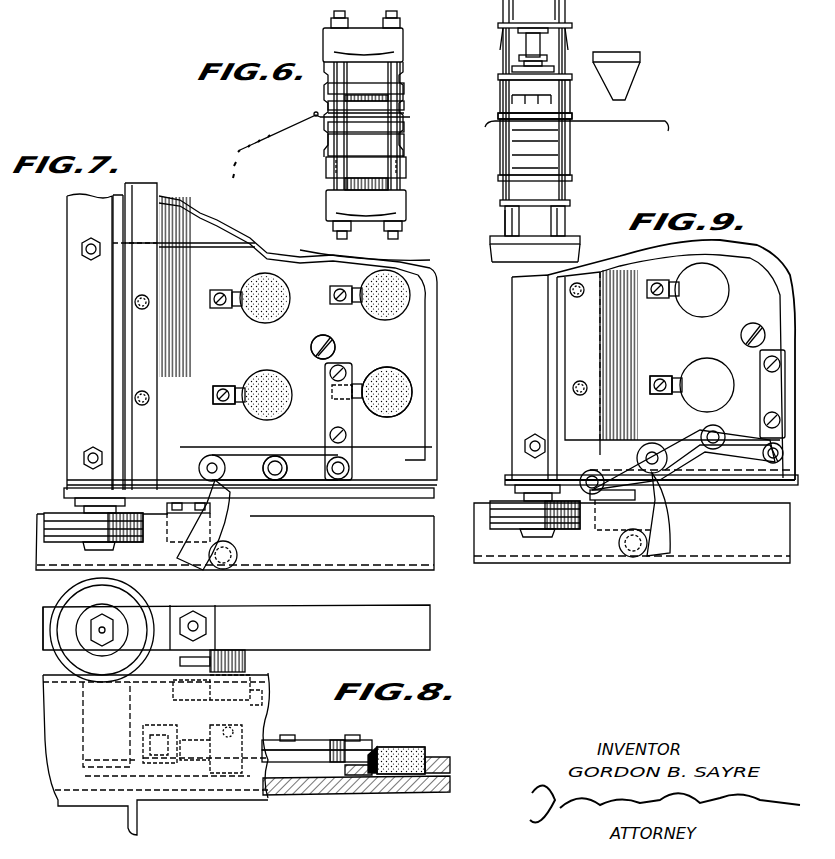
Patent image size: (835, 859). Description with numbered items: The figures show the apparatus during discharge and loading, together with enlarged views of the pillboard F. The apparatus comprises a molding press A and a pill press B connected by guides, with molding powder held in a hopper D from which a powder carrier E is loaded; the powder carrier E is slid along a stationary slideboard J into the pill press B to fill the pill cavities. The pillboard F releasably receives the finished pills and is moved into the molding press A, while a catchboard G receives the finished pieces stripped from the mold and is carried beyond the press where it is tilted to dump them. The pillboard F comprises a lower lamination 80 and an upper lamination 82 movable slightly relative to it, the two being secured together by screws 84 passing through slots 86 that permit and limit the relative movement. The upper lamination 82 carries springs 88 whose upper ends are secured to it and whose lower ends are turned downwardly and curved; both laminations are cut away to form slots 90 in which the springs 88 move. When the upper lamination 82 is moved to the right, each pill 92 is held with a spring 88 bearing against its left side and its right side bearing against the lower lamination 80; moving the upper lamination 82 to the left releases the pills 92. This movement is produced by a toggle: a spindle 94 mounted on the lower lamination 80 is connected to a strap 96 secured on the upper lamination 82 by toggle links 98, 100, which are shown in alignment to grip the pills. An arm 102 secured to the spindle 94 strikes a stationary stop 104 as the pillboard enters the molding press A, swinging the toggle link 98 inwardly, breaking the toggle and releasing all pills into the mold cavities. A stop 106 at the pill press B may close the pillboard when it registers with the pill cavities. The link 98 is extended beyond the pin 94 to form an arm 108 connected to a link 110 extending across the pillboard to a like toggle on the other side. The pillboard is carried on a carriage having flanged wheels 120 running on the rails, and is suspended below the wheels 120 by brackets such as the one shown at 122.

In FIG. 6, the molding press A is at (404, 45).
In FIG. 6, the pill press B is at (566, 12).
In FIG. 6, the hopper D is at (641, 60).
In FIG. 6, the powder carrier E is at (572, 112).
In FIG. 6, the pillboard F is at (404, 112).
In FIG. 6, the catchboard G is at (300, 120).
In FIG. 6, the stationary slideboard J is at (577, 133).
In FIG. 7, the lower lamination 80 is at (430, 300).
In FIG. 8, the lower lamination 80 is at (450, 784).
In FIG. 9, the lower lamination 80 is at (757, 255).
In FIG. 7, the upper lamination 82 is at (418, 358).
In FIG. 8, the upper lamination 82 is at (448, 757).
In FIG. 9, the upper lamination 82 is at (625, 275).
In FIG. 7, the screws 84 is at (336, 347).
In FIG. 9, the screws 84 is at (740, 335).
In FIG. 7, the slots 86 is at (310, 347).
In FIG. 7, the springs 88 is at (240, 318).
In FIG. 8, the springs 88 is at (385, 747).
In FIG. 9, the springs 88 is at (690, 337).
In FIG. 7, the slots 90 is at (232, 410).
In FIG. 9, the slots 90 is at (680, 372).
In FIG. 7, the pills 92 is at (403, 388).
In FIG. 8, the pills 92 is at (418, 747).
In FIG. 7, the spindle 94 is at (212, 473).
In FIG. 8, the spindle 94 is at (252, 710).
In FIG. 9, the spindle 94 is at (652, 445).
In FIG. 7, the strap 96 is at (345, 415).
In FIG. 8, the strap 96 is at (372, 752).
In FIG. 9, the strap 96 is at (772, 394).
In FIG. 7, the toggle link 98 is at (258, 478).
In FIG. 9, the toggle link 98 is at (695, 450).
In FIG. 7, the toggle link 100 is at (318, 474).
In FIG. 7, the arm 102 is at (192, 555).
In FIG. 8, the arm 102 is at (195, 655).
In FIG. 9, the arm 102 is at (662, 540).
In FIG. 9, the stationary stop 104 is at (633, 550).
In FIG. 7, the stop 106 is at (236, 560).
In FIG. 7, the arm 108 is at (180, 473).
In FIG. 8, the arm 108 is at (193, 740).
In FIG. 9, the arm 108 is at (620, 468).
In FIG. 7, the link 110 is at (135, 350).
In FIG. 8, the link 110 is at (155, 740).
In FIG. 9, the link 110 is at (583, 352).
In FIG. 7, the flanged wheels 120 is at (62, 520).
In FIG. 8, the flanged wheels 120 is at (62, 612).
In FIG. 7, the strap or bracket 122 is at (78, 402).
In FIG. 8, the strap or bracket 122 is at (85, 765).
In FIG. 9, the strap or bracket 122 is at (527, 402).